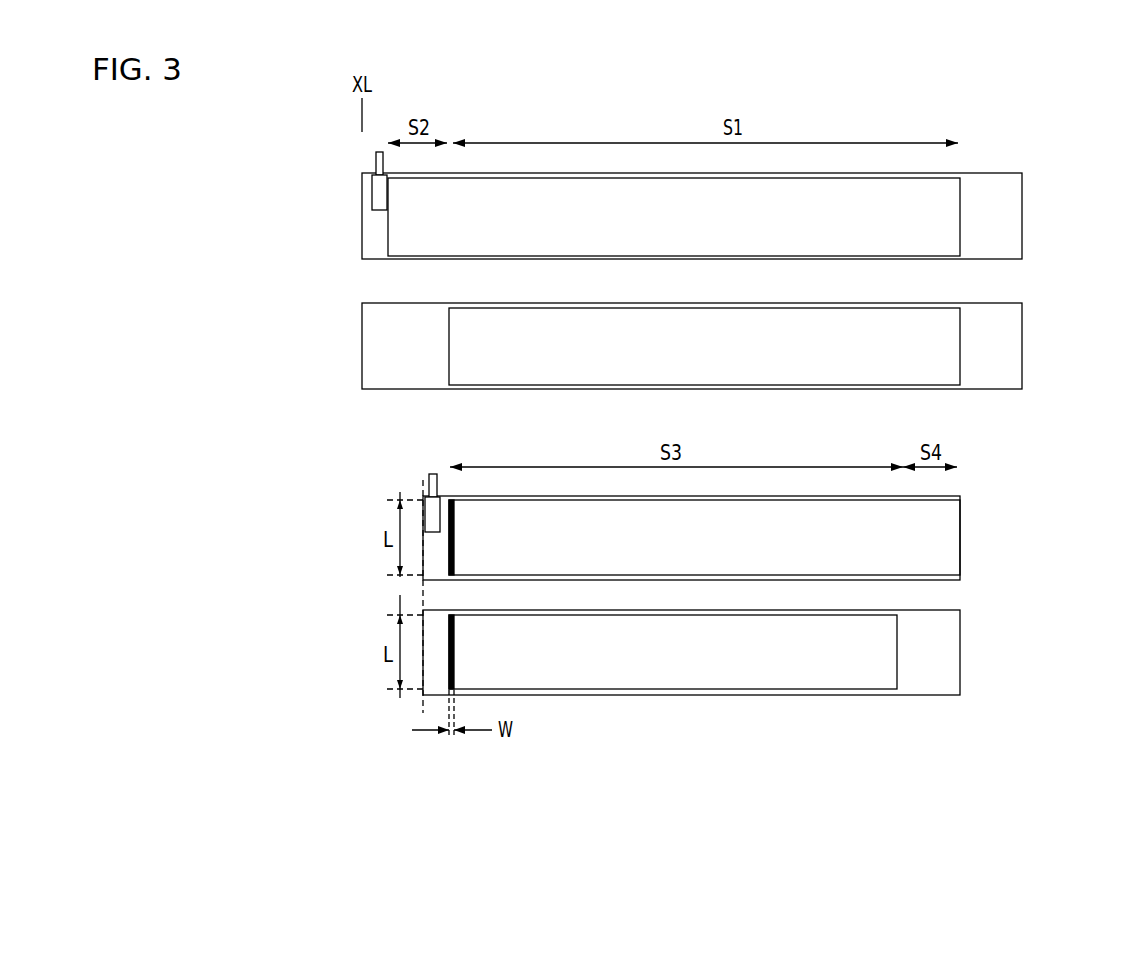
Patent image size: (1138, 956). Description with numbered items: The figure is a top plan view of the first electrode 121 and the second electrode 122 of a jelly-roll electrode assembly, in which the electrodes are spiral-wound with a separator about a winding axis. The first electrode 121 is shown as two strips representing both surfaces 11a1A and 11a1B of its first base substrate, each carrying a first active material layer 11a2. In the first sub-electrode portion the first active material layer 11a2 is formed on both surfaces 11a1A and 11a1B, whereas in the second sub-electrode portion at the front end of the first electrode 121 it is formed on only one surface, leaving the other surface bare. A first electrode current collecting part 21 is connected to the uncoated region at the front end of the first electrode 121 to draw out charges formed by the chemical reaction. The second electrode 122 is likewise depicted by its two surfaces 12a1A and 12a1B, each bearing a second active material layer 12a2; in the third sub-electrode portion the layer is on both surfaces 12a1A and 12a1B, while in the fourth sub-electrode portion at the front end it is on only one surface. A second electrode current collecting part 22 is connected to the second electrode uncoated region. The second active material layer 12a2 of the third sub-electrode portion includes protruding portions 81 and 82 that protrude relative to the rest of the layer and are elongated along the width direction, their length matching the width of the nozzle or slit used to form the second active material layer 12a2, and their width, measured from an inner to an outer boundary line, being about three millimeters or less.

The first electrode 121 is at (342, 173).
The first surface of first base substrate 11a1A is at (1005, 227).
The second surface of first base substrate 11a1B is at (1007, 333).
The first active material layer 11a2 is at (953, 210).
The first electrode current collecting part 21 is at (377, 152).
The second electrode 122 is at (372, 496).
The first surface of second base substrate 12a1A is at (958, 498).
The second surface of second base substrate 12a1B is at (952, 677).
The second active material layer 12a2 is at (952, 552).
The protruding portion 81 is at (455, 528).
The protruding portion 82 is at (455, 662).
The second electrode current collecting part 22 is at (433, 473).